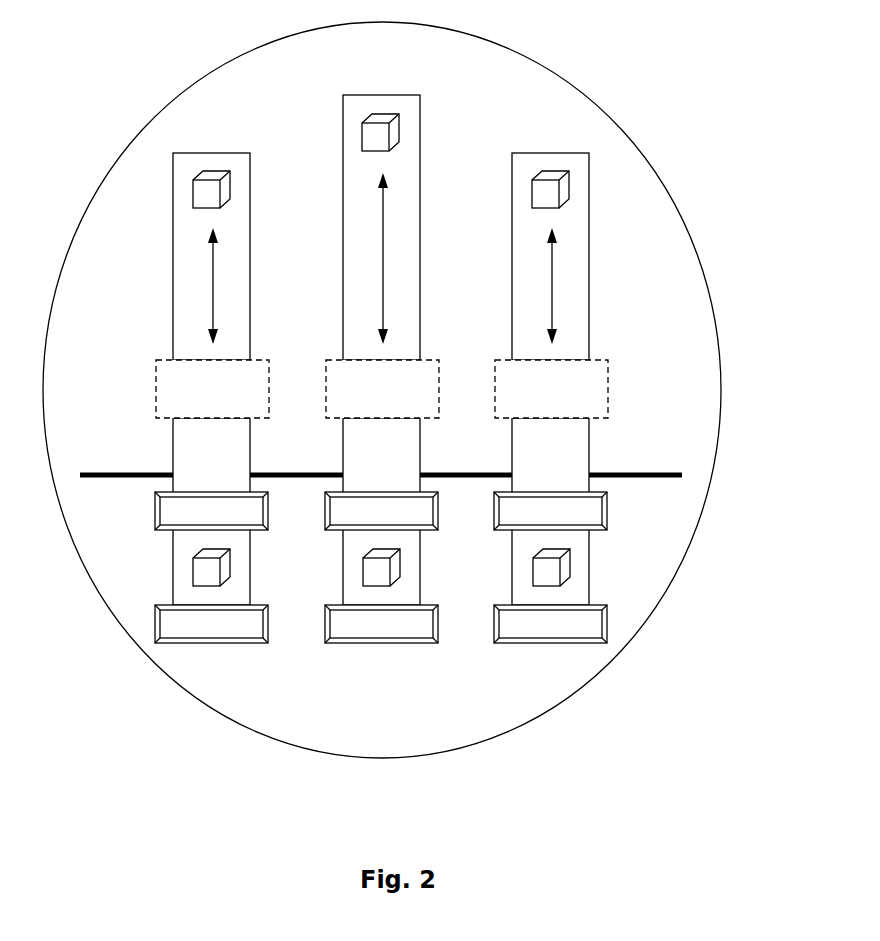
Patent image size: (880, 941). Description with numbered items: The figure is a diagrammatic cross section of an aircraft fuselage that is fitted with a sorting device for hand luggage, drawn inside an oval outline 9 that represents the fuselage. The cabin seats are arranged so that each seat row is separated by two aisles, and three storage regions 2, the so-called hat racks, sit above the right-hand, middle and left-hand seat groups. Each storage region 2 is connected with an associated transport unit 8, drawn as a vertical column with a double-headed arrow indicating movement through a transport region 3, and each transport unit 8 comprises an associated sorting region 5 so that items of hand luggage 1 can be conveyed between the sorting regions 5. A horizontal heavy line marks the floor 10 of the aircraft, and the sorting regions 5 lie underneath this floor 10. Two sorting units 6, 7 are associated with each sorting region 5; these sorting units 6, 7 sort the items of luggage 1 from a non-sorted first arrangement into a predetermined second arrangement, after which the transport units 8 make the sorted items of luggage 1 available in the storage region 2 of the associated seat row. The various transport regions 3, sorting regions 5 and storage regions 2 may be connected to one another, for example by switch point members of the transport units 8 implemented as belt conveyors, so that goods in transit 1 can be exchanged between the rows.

The items of luggage 1 is at (356, 338).
The storage region 2 is at (190, 190).
The transport region 3 is at (358, 350).
The transport unit 8 is at (202, 306).
The sorting region 5 is at (322, 647).
The sorting unit 6 is at (153, 530).
The sorting unit 7 is at (162, 628).
The treatment chamber 9 is at (172, 88).
The floor 10 is at (132, 480).